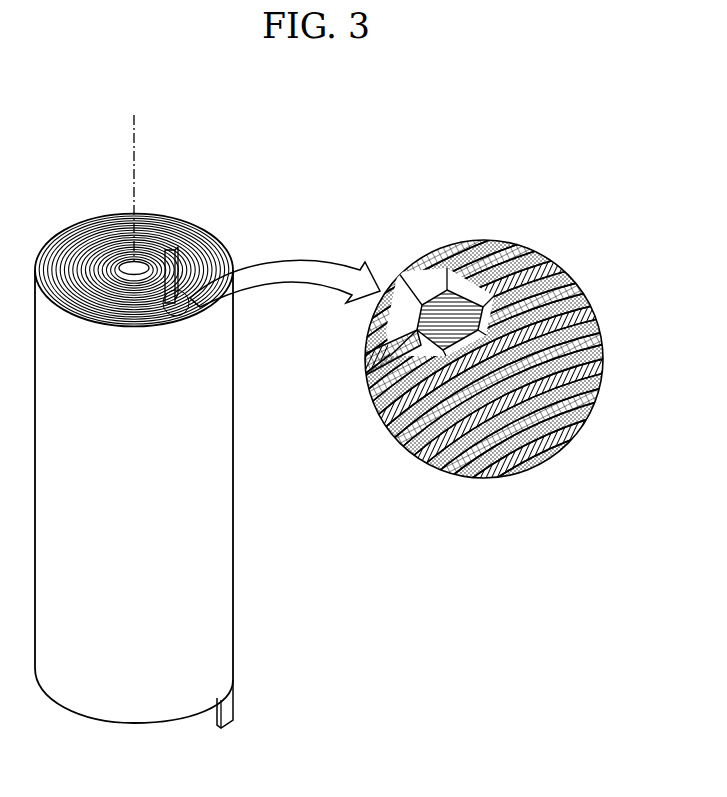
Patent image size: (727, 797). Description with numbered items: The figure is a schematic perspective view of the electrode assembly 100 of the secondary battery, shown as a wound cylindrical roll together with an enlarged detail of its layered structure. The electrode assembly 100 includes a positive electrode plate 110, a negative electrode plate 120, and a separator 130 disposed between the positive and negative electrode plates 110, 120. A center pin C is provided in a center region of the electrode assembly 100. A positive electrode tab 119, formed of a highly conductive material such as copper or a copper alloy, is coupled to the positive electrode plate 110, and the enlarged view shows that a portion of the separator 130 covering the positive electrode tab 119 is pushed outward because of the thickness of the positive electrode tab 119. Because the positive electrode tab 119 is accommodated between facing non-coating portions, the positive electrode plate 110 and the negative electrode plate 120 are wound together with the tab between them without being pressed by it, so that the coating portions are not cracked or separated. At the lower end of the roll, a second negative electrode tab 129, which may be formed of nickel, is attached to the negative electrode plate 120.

The electrode assembly 100 is at (263, 180).
The positive electrode plate 110 is at (223, 497).
The positive electrode tab 119 is at (180, 253).
The negative electrode plate 120 is at (362, 390).
The second negative electrode tab 129 is at (229, 719).
The separator 130 is at (525, 246).
The center pin C is at (141, 263).